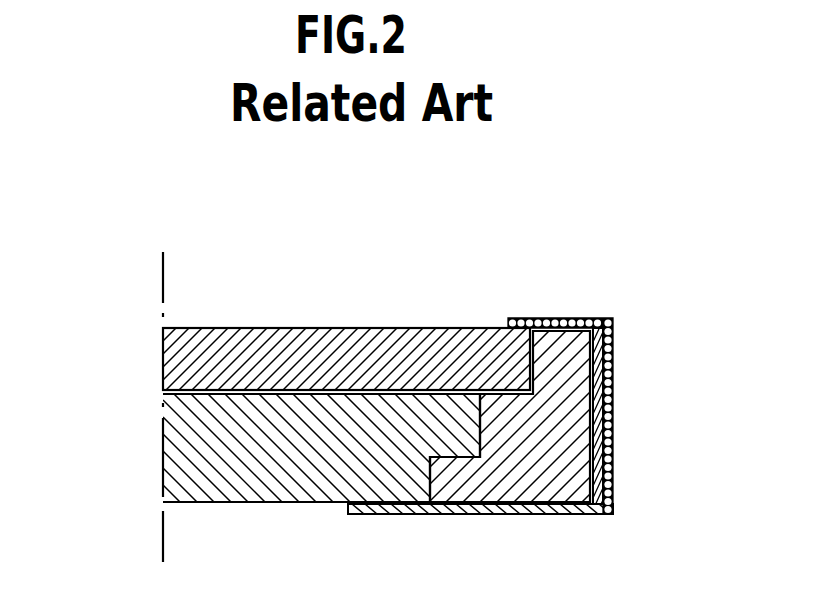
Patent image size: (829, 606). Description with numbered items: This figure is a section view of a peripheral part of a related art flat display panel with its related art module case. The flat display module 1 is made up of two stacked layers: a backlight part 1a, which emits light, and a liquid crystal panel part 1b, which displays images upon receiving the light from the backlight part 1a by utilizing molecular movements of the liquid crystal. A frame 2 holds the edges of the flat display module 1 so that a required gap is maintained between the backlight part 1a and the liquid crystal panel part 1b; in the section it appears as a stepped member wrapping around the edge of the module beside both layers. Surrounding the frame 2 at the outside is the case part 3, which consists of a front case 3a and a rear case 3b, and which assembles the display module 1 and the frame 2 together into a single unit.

The flat display module 1 is at (287, 415).
The backlight part 1a is at (287, 448).
The liquid crystal panel part 1b is at (165, 355).
The frame 2 is at (573, 360).
The case part 3 is at (611, 420).
The front case 3a is at (598, 400).
The rear case 3b is at (613, 452).